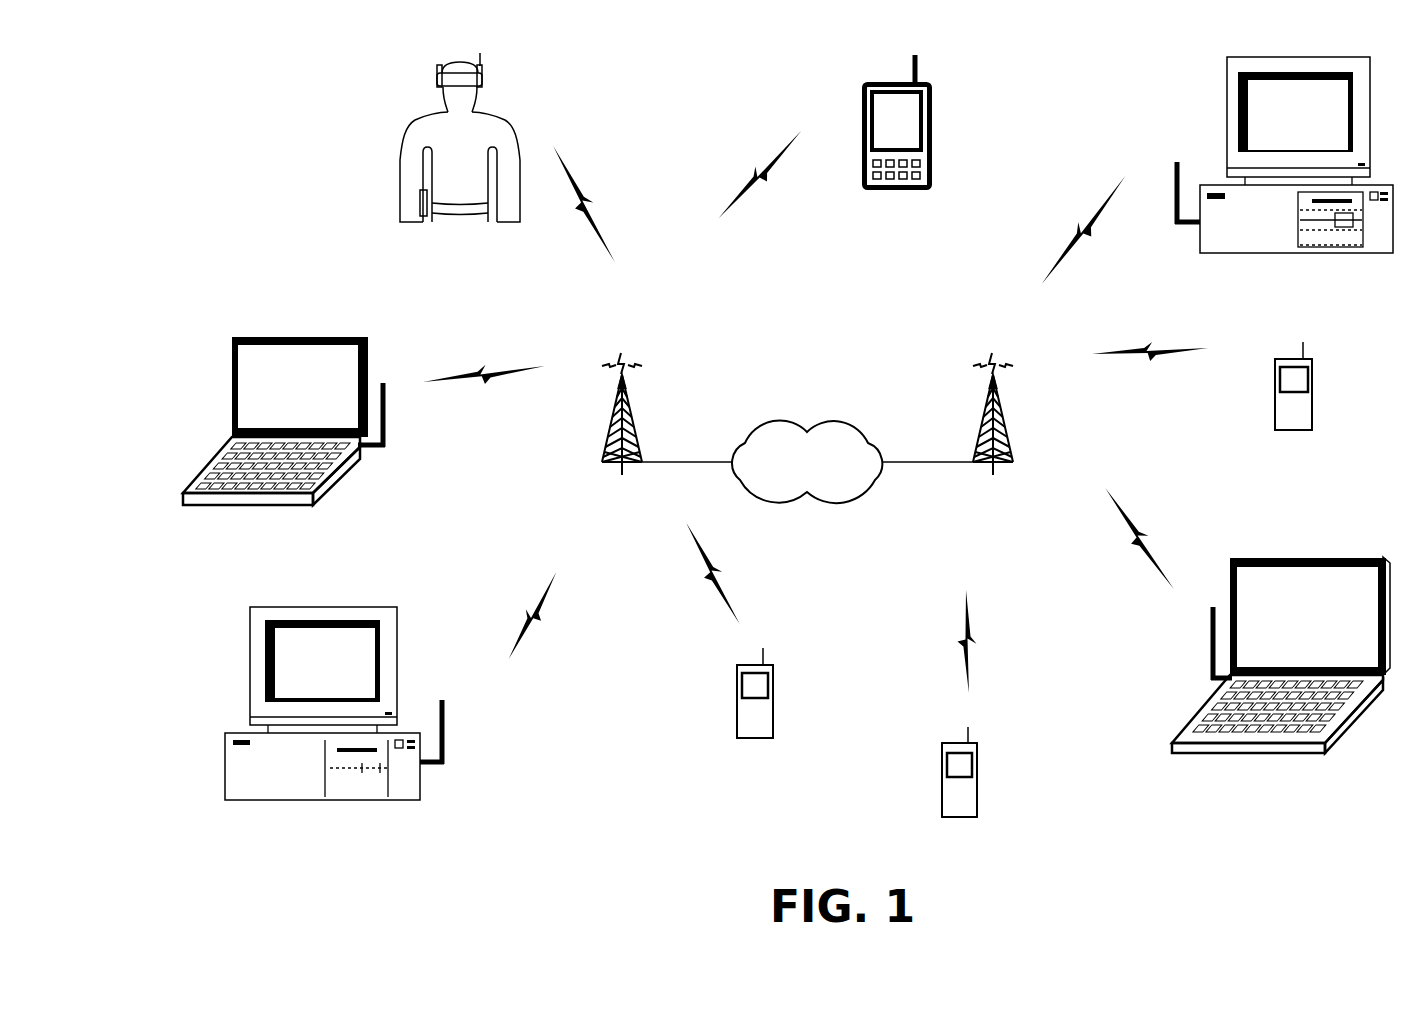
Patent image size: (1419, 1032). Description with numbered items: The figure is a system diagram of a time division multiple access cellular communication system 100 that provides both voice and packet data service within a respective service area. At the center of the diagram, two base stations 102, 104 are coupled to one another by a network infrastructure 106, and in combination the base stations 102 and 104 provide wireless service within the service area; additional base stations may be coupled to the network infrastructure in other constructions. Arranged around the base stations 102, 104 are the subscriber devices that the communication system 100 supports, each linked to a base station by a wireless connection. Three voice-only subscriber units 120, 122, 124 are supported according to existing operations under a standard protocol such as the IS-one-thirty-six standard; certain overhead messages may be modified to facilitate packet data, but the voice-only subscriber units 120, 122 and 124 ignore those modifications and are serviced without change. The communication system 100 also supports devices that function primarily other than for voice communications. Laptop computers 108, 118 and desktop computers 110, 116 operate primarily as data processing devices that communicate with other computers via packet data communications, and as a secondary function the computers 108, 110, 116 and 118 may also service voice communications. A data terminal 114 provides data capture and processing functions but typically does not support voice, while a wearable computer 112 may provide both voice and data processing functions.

The cellular communication system 100 is at (604, 854).
The base station 102 is at (630, 470).
The base station 104 is at (1000, 470).
The network infrastructure 106 is at (837, 421).
The laptop computer 108 is at (273, 336).
The desktop computer 110 is at (397, 667).
The wearable computer 112 is at (423, 216).
The data terminal 114 is at (932, 148).
The desktop computer 116 is at (1227, 105).
The laptop computer 118 is at (1338, 556).
The voice-only subscriber unit 120 is at (737, 718).
The voice-only subscriber unit 122 is at (942, 796).
The voice-only subscriber unit 124 is at (1275, 416).